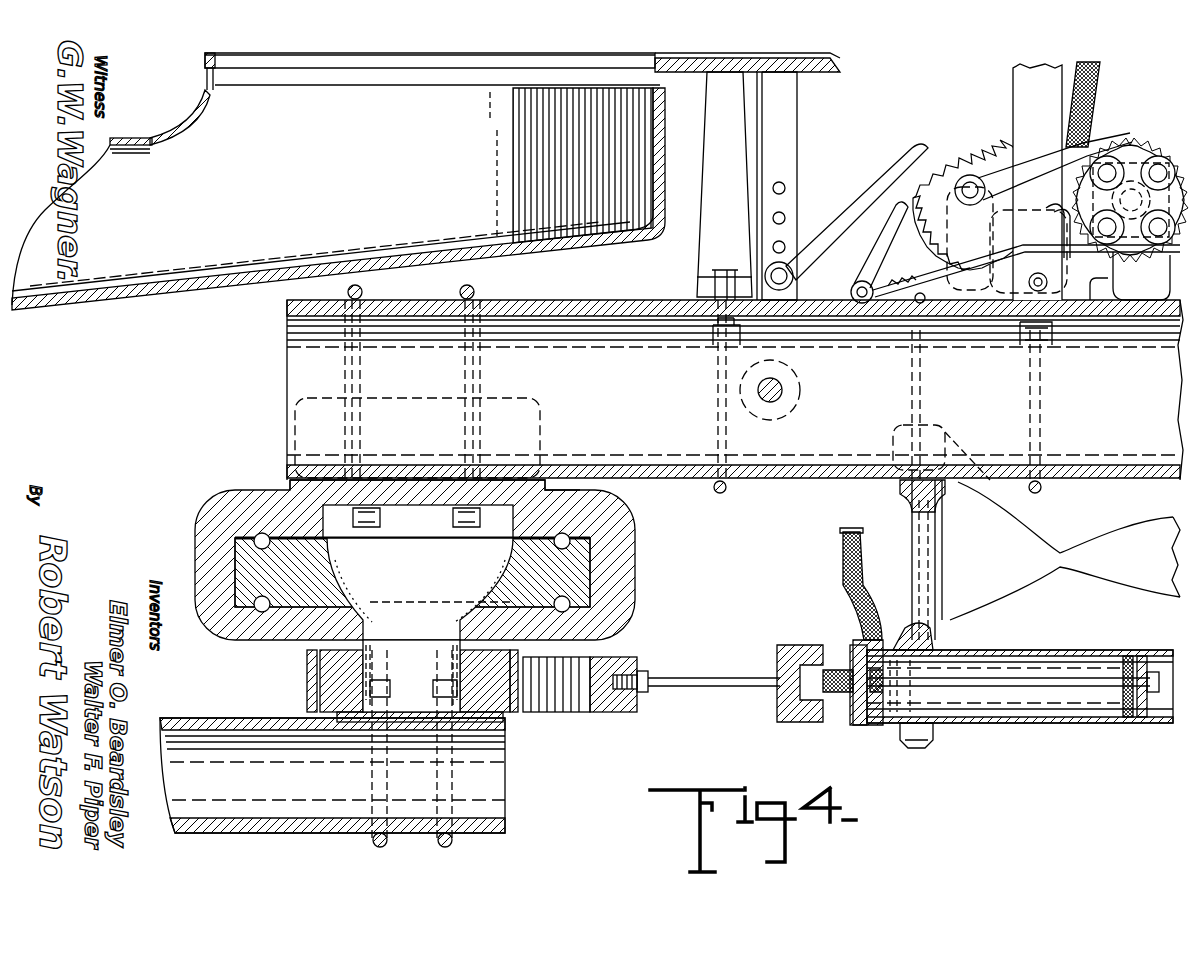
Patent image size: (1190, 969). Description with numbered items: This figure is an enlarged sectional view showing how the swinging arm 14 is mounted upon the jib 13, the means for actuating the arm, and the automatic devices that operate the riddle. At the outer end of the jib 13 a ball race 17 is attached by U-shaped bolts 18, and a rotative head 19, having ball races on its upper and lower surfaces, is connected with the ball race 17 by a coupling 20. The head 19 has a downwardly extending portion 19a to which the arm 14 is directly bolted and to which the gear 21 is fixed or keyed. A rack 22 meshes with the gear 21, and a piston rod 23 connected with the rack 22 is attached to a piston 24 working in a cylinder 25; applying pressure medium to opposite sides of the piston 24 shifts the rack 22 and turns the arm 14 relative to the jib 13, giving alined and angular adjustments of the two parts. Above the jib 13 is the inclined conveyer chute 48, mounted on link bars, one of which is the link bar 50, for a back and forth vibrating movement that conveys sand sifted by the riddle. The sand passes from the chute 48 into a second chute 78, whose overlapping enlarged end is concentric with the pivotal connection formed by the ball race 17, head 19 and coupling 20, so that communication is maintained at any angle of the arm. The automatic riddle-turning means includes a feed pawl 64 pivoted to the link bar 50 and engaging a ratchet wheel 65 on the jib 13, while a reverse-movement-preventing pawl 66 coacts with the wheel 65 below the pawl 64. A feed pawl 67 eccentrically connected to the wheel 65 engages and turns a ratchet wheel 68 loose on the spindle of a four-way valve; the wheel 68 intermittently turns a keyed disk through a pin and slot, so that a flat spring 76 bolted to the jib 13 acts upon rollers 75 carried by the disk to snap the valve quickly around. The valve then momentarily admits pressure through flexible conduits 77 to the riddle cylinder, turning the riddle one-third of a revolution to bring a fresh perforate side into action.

The jib 13 is at (624, 330).
The swinging arm 14 is at (225, 748).
The ball race 17 is at (545, 498).
The U-shaped bolts 18 is at (488, 343).
The rotative head 19 is at (585, 577).
The downwardly extending portion 19a is at (350, 665).
The coupling 20 is at (612, 565).
The gear 21 is at (508, 680).
The rack 22 is at (612, 665).
The piston rod 23 is at (765, 682).
The piston 24 is at (1155, 670).
The working cylinder 25 is at (1012, 665).
The conveyer chute 48 is at (830, 76).
The link bar 50 is at (792, 155).
The pawl 64 is at (857, 212).
The ratchet wheel 65 is at (985, 132).
The reverse-movement-preventing pawl 66 is at (873, 253).
The feed pawl 67 is at (1035, 165).
The ratchet wheel 68 is at (1120, 150).
The rollers 75 is at (1160, 258).
The flat spring 76 is at (1072, 245).
The flexible conduits 77 is at (1096, 92).
The second chute 78 is at (232, 255).